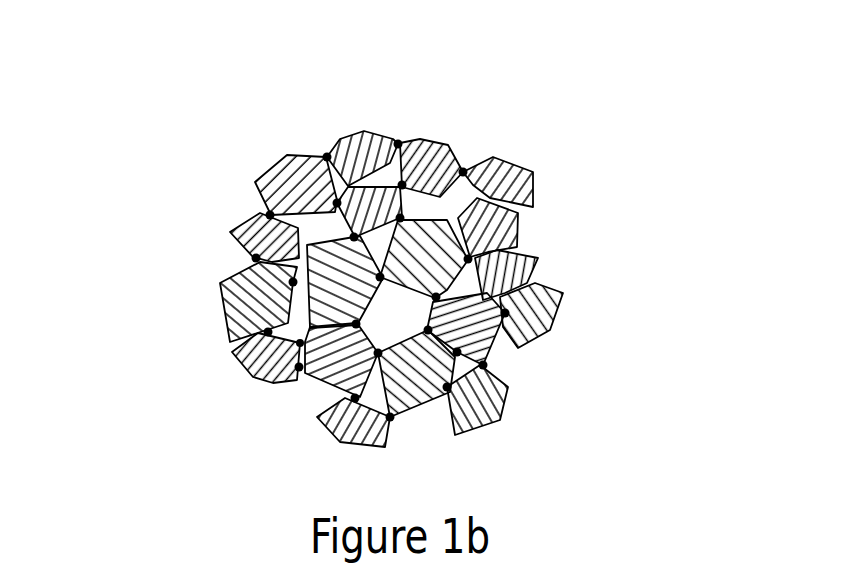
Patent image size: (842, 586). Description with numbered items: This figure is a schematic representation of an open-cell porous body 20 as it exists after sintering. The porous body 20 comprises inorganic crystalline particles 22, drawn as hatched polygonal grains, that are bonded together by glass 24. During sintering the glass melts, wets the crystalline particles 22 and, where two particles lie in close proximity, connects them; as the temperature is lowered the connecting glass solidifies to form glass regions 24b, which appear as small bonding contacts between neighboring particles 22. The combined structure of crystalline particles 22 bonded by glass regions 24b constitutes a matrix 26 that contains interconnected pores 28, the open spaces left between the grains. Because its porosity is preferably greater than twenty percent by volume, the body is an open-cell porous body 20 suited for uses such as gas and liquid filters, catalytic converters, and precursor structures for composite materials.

The porous body 20 is at (530, 148).
The inorganic crystalline particles 22 is at (282, 192).
The glass 24 is at (397, 143).
The glass regions 24b is at (395, 164).
The matrix 26 is at (223, 137).
The interconnected pores 28 is at (390, 315).